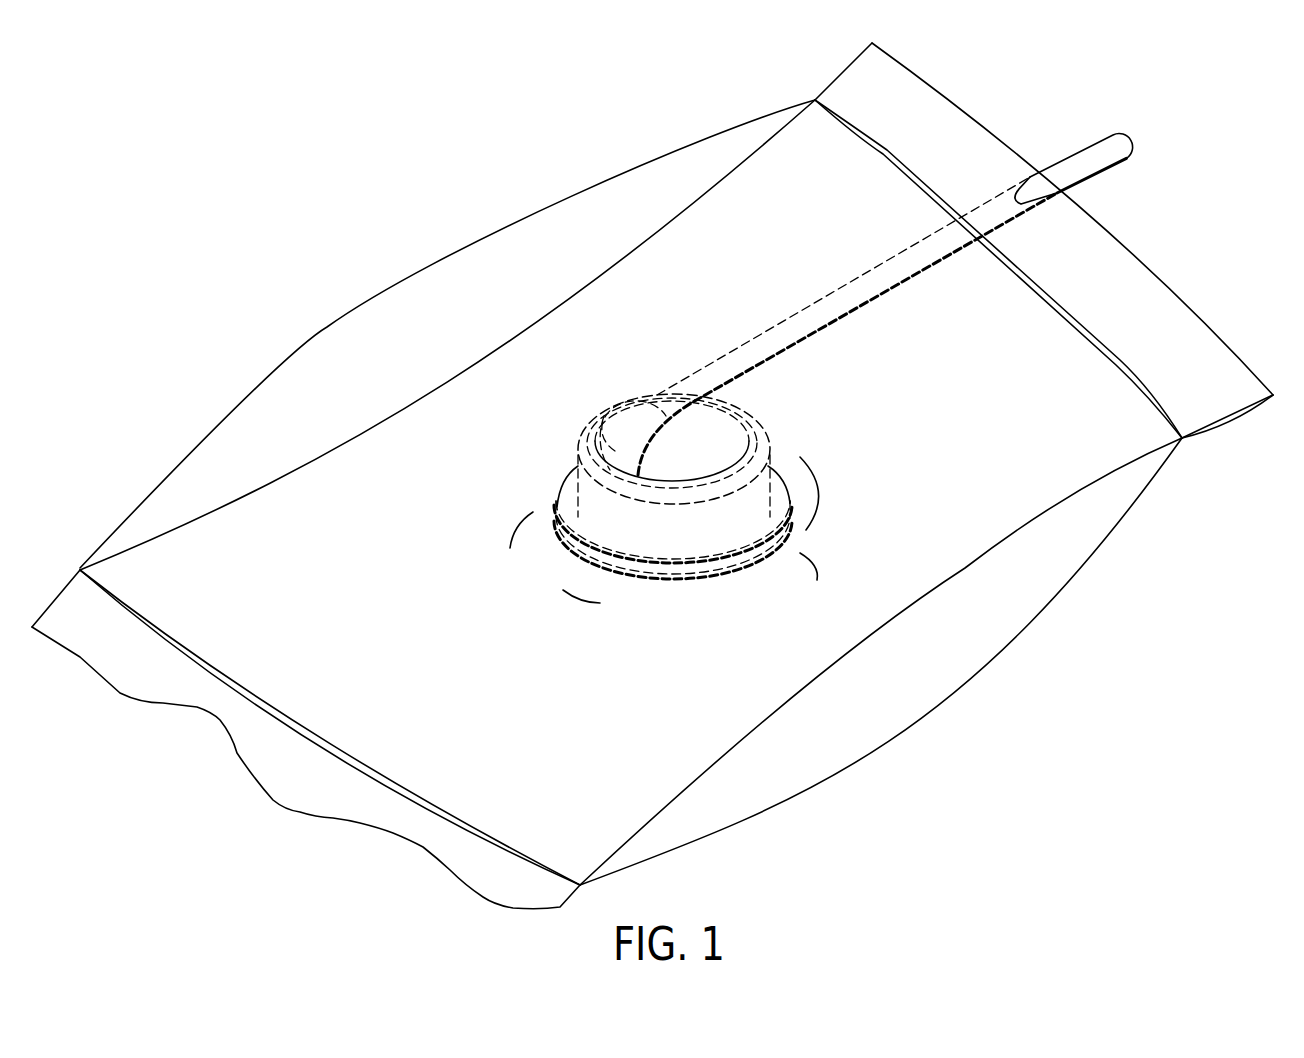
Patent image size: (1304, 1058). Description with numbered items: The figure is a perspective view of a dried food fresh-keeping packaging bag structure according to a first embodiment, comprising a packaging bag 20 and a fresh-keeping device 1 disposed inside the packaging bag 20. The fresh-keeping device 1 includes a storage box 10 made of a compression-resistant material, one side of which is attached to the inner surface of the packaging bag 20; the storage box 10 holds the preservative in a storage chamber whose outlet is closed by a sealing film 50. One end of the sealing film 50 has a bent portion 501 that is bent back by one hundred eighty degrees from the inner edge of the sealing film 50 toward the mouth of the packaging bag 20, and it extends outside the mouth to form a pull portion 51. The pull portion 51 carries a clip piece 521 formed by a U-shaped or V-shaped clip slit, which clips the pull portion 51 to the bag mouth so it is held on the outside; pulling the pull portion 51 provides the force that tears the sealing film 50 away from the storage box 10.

The fresh-keeping device 1 is at (173, 266).
The storage box 10 is at (705, 537).
The packaging bag 20 is at (965, 568).
The sealing film 50 is at (813, 281).
The bent portion 501 is at (633, 440).
The pull portion 51 is at (1098, 169).
The clip piece 521 is at (1020, 190).